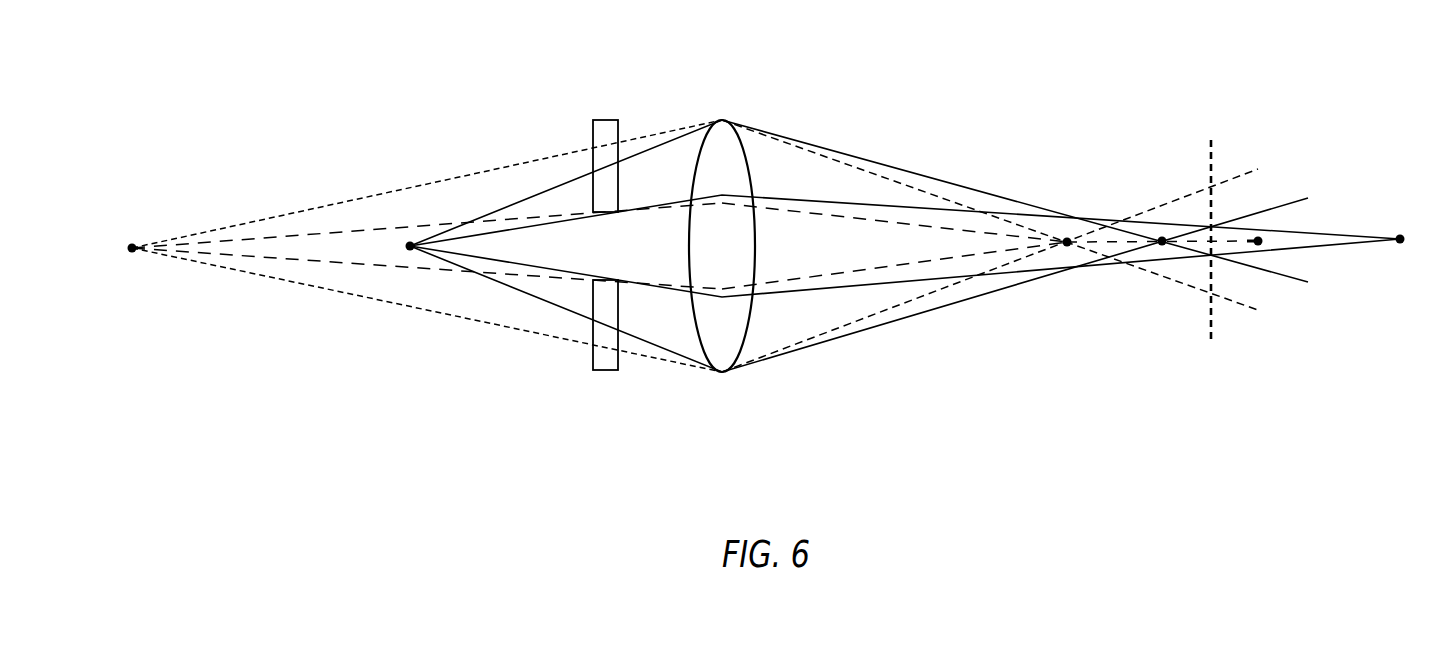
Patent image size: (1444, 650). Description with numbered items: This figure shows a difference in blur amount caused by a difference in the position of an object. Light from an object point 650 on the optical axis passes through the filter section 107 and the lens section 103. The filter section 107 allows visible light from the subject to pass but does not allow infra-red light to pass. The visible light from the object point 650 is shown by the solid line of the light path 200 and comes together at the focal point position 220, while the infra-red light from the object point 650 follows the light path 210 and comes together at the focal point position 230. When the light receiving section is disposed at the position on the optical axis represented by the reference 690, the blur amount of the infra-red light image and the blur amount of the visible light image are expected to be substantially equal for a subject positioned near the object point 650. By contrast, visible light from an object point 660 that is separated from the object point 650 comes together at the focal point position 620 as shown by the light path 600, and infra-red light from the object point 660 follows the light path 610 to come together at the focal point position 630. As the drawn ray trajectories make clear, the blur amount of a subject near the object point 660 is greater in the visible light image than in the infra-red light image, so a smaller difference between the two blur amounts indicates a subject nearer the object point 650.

The lens section 103 is at (716, 147).
The filter section 107 is at (606, 119).
The light path 200 is at (952, 184).
The light path 210 is at (762, 198).
The focal point position 220 is at (1162, 244).
The focal point position 230 is at (1401, 236).
The light path 600 is at (877, 174).
The light path 610 is at (793, 213).
The focal point position 620 is at (1067, 239).
The focal point position 630 is at (1264, 237).
The object point 650 is at (410, 243).
The object point 660 is at (132, 244).
The position on the optical axis 690 is at (1218, 136).